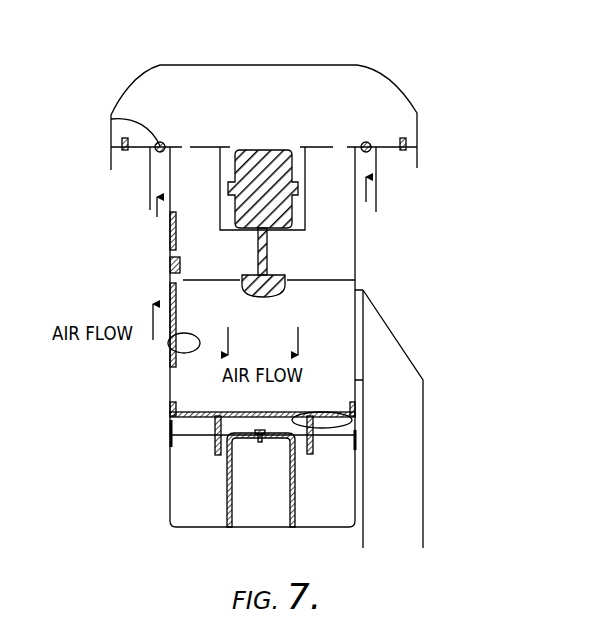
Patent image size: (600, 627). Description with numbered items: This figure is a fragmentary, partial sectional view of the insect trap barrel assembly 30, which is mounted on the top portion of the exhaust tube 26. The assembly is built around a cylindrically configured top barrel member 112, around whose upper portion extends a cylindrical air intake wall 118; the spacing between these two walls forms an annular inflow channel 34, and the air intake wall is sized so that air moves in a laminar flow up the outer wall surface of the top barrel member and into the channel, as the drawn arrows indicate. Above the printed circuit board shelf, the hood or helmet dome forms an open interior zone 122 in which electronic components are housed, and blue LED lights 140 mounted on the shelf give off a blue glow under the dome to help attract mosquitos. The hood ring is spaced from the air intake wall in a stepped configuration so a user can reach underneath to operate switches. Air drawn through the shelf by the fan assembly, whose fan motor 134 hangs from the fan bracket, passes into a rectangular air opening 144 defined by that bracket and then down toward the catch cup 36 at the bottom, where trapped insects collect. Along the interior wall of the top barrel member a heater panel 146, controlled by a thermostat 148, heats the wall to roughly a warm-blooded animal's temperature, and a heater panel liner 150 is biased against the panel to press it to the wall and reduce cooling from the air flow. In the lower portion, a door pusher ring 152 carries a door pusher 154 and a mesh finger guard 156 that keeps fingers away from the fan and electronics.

The exhaust tube 26 is at (424, 497).
The insect trap barrel assembly 30 is at (428, 273).
The inflow channel 34 is at (362, 168).
The catch cup 36 is at (183, 473).
The top barrel member 112 is at (355, 256).
The air intake wall 118 is at (378, 181).
The open interior zone 122 is at (360, 97).
The fan motor 134 is at (280, 198).
The blue LED lights 140 is at (124, 138).
The rectangular air opening 144 is at (291, 148).
The heater panel 146 is at (170, 220).
The thermostat 148 is at (170, 272).
The heater panel liner 150 is at (172, 353).
The door pusher ring 152 is at (345, 423).
The door pusher 154 is at (307, 410).
The finger guard 156 is at (322, 438).